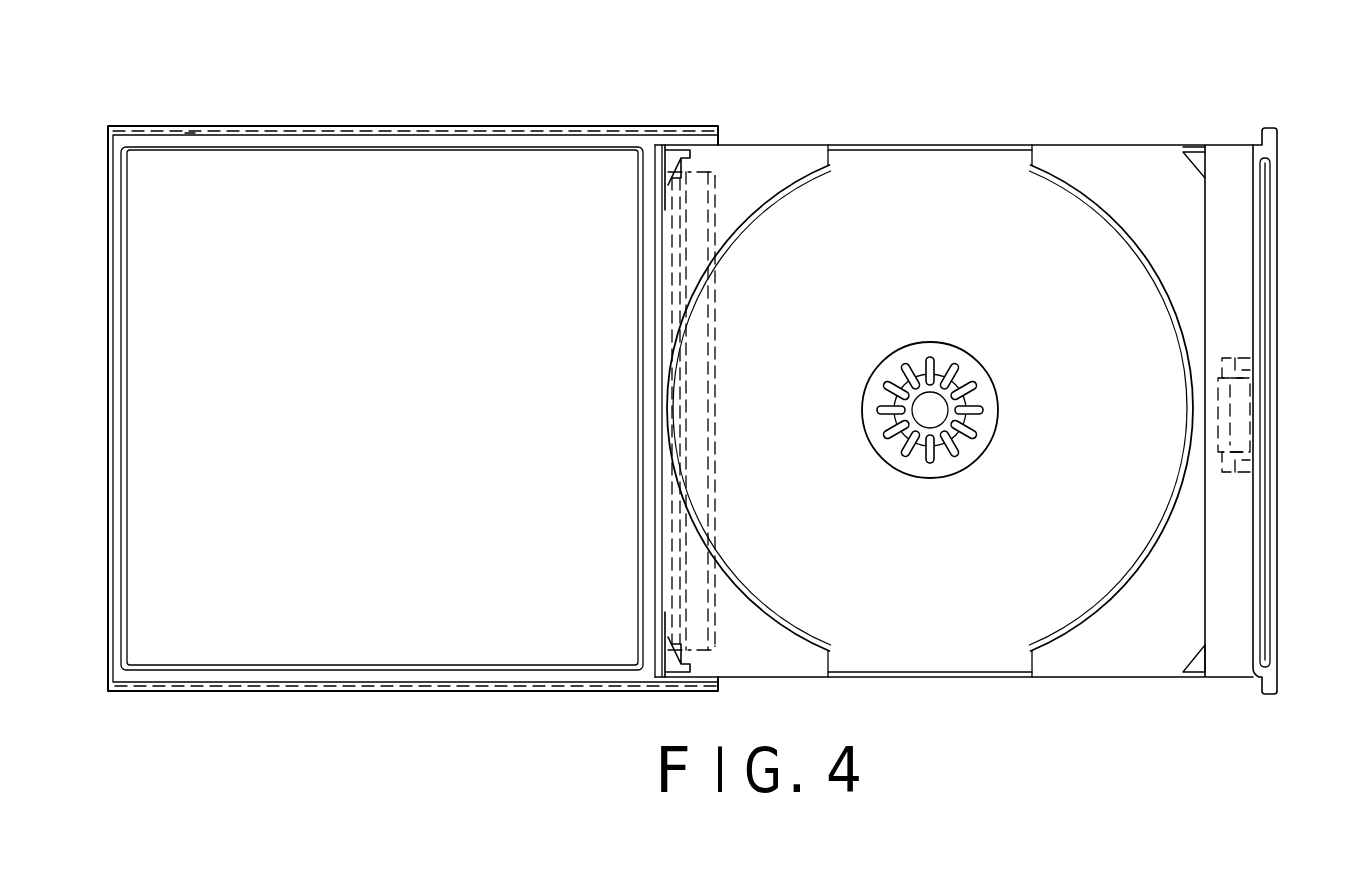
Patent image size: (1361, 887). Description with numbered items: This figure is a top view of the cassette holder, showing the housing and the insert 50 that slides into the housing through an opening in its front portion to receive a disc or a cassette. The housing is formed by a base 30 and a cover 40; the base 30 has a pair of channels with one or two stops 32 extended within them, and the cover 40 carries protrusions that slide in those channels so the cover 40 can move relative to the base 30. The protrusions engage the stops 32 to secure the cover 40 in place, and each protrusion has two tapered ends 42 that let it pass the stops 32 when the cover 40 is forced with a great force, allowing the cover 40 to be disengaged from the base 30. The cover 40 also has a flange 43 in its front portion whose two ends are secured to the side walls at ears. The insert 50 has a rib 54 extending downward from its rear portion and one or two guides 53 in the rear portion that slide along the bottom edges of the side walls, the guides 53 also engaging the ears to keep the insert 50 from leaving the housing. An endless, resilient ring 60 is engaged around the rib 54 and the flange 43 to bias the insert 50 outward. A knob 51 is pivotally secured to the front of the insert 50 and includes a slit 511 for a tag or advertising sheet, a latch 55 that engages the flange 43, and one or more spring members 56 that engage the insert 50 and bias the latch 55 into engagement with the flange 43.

The base 30 is at (293, 135).
The stop 32 is at (190, 133).
The cover 40 is at (413, 170).
The tapered end 42 is at (146, 130).
The flange 43 is at (700, 198).
The insert 50 is at (1108, 160).
The knob 51 is at (1278, 290).
The slit 511 is at (1270, 548).
The guide 53 is at (665, 148).
The rib 54 is at (672, 210).
The latch 55 is at (1245, 432).
The spring member 56 is at (1248, 360).
The resilient ring 60 is at (720, 195).